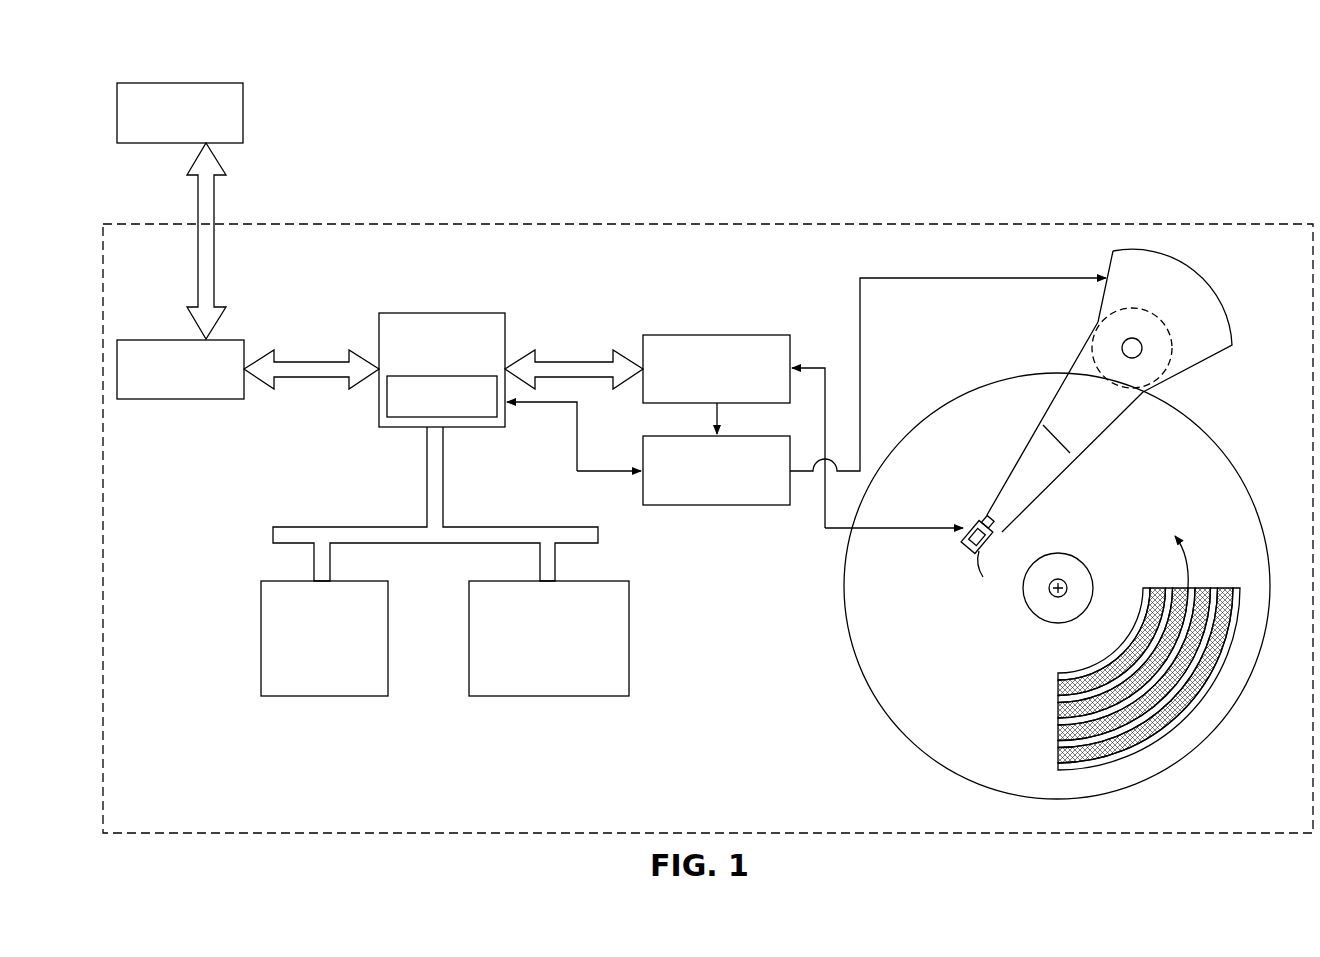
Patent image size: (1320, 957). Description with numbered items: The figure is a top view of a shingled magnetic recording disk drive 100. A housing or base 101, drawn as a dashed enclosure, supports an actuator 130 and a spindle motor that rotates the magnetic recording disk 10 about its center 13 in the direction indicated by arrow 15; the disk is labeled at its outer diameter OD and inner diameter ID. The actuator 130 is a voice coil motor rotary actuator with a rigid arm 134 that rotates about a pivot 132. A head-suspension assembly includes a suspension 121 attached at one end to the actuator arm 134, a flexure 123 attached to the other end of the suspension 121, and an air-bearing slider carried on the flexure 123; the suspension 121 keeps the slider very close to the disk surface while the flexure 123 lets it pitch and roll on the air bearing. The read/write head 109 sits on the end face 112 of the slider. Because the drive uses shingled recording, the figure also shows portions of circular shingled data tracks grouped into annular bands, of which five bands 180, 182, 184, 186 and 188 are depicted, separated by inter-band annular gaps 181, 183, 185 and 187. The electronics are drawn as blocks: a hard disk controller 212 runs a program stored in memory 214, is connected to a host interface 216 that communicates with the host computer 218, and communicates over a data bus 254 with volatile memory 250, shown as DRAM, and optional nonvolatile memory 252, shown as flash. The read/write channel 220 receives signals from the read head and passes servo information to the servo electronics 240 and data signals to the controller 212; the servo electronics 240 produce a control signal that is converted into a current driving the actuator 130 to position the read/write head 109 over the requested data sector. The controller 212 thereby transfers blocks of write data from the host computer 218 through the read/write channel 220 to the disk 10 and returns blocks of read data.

The disk drive 100 is at (1133, 90).
The housing or base 101 is at (1217, 224).
The host computer 218 is at (147, 83).
The host interface 216 is at (167, 340).
The hard disk controller 212 is at (402, 313).
The memory 214 is at (403, 417).
The data bus 254 is at (322, 527).
The volatile memory 250 is at (261, 590).
The nonvolatile memory 252 is at (629, 590).
The read/write channel 220 is at (681, 335).
The servo electronics 240 is at (681, 436).
The magnetic recording disk 10 is at (1190, 415).
The outer diameter OD is at (1218, 446).
The inner diameter ID is at (1060, 553).
The center 13 is at (1056, 596).
The actuator 130 is at (1183, 291).
The pivot 132 is at (1121, 348).
The suspension 121 is at (1038, 459).
The rigid arm 134 is at (1060, 428).
The end face 112 is at (962, 543).
The read/write head 109 is at (969, 553).
The flexure 123 is at (1001, 573).
The band 180 is at (1058, 676).
The inter-band gap 181 is at (1158, 588).
The band 182 is at (1058, 699).
The inter-band gap 183 is at (1180, 588).
The band 184 is at (1058, 721).
The inter-band gap 185 is at (1203, 588).
The band 186 is at (1058, 743).
The inter-band gap 187 is at (1226, 588).
The band 188 is at (1058, 766).
The arrow 15 is at (1180, 540).